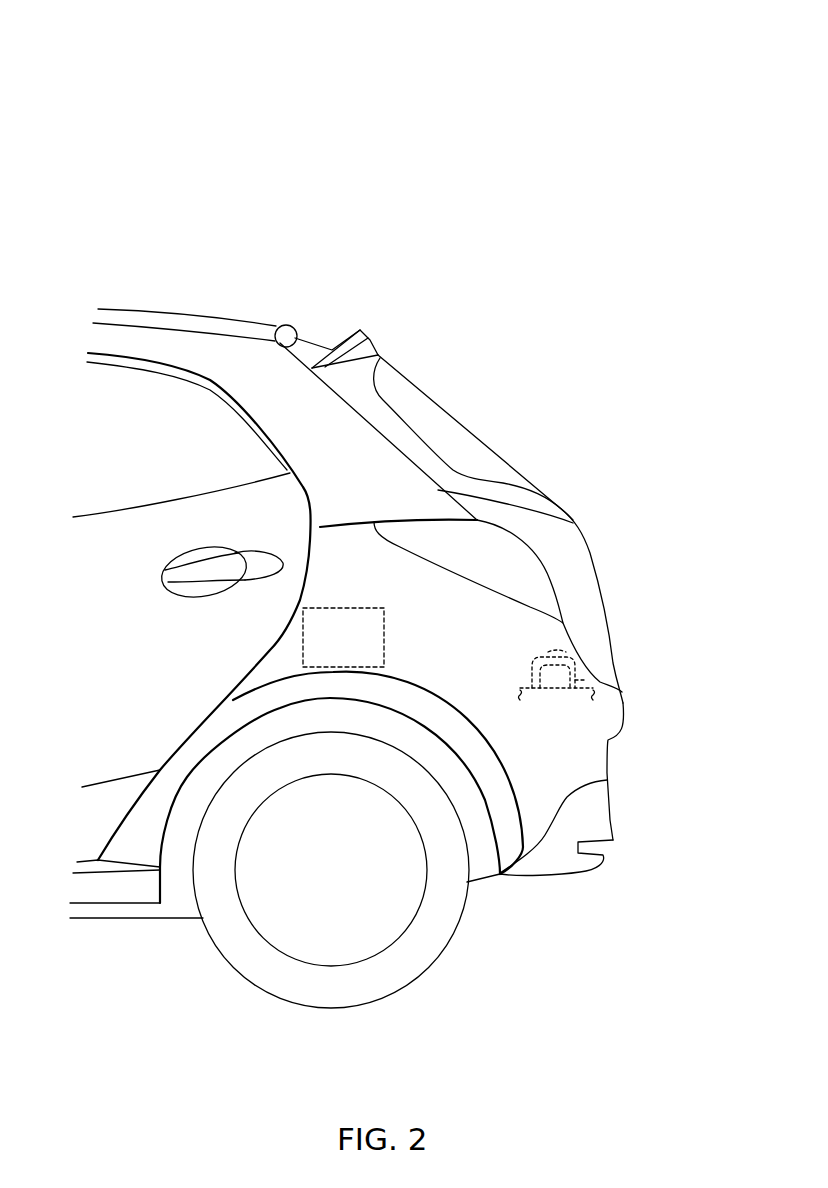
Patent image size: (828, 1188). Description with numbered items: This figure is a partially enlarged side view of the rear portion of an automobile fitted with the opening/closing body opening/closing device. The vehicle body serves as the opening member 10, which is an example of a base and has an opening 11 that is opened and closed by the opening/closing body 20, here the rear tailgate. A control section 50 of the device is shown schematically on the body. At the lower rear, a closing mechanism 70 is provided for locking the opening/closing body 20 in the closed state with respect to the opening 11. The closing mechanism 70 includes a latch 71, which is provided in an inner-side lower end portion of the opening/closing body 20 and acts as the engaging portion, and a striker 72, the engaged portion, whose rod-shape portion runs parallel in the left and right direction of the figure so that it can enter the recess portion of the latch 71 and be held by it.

The opening member 10 is at (455, 228).
The opening 11 is at (578, 592).
The opening/closing body 20 is at (584, 507).
The control section 50 is at (283, 621).
The closing mechanism 70 is at (513, 648).
The latch 71 is at (593, 667).
The striker 72 is at (532, 671).